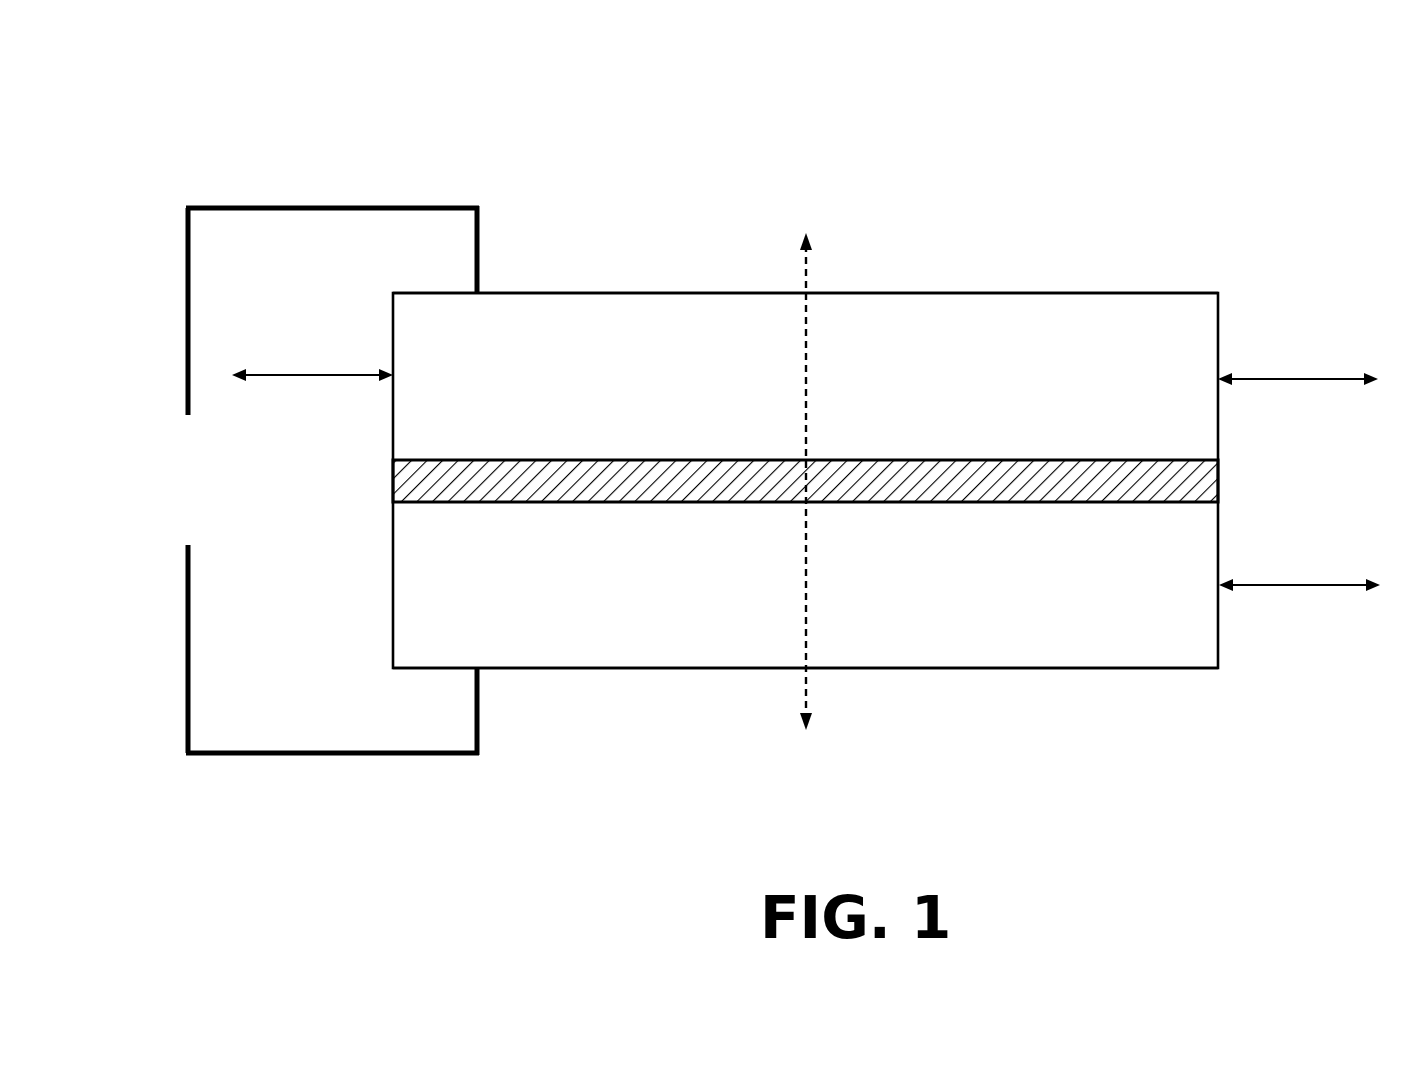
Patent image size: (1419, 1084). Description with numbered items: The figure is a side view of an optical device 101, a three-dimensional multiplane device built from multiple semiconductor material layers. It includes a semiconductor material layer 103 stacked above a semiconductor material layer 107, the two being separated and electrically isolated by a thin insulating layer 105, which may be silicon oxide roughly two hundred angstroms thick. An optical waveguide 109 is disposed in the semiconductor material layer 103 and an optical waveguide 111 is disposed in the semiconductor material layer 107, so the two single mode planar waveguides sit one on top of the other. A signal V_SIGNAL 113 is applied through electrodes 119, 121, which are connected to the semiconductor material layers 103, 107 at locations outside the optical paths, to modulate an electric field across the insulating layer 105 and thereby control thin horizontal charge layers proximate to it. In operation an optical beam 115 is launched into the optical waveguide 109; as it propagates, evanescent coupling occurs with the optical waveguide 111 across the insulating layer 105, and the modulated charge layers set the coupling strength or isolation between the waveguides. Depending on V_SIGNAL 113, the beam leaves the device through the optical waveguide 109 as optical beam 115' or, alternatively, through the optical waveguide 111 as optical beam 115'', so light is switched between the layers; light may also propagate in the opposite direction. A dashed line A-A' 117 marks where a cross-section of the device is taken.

The optical device 101 is at (1308, 94).
The semiconductor material layer 103 is at (1208, 416).
The insulating layer 105 is at (1212, 476).
The semiconductor material layer 107 is at (1215, 643).
The optical waveguide 109 is at (1120, 300).
The optical waveguide 111 is at (1073, 658).
The signal V_SIGNAL 113 is at (170, 513).
The optical beam 115 is at (312, 329).
The optical beam 115' is at (1299, 337).
The optical beam 115'' is at (1319, 624).
The dashed line A-A' 117 is at (815, 695).
The electrode 119 is at (326, 204).
The electrode 121 is at (265, 757).